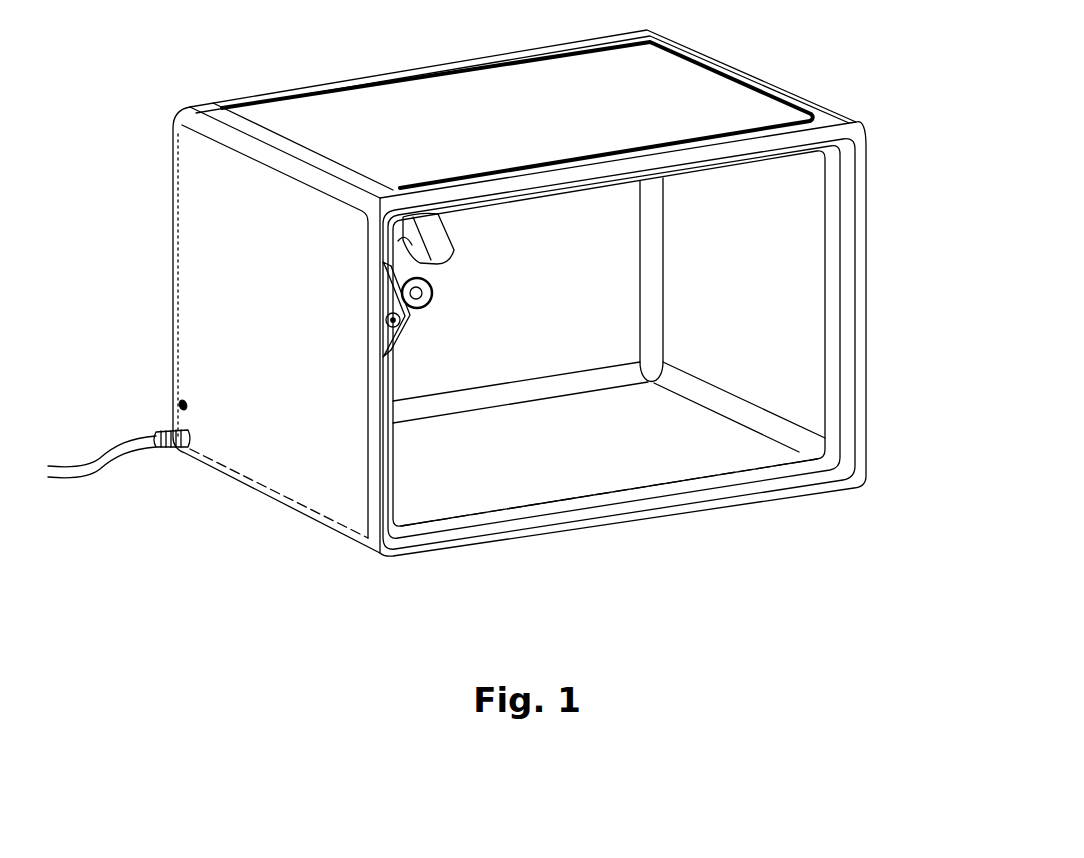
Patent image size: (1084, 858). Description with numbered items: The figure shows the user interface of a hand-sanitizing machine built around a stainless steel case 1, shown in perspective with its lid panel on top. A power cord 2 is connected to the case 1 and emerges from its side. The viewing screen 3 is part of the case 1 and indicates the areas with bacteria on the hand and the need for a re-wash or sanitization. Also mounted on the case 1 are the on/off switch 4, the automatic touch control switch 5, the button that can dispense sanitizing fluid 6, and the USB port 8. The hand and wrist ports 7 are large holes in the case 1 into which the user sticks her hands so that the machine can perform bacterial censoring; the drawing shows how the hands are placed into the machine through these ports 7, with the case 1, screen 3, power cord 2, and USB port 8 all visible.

The case 1 is at (812, 114).
The power cord 2 is at (120, 461).
The viewing screen 3 is at (677, 80).
The on/off switch 4 is at (386, 319).
The automatic touch control switch 5 is at (793, 466).
The button that can dispense sanitizing fluid 6 is at (421, 296).
The hand and wrist ports 7 is at (795, 265).
The USB port 8 is at (180, 404).